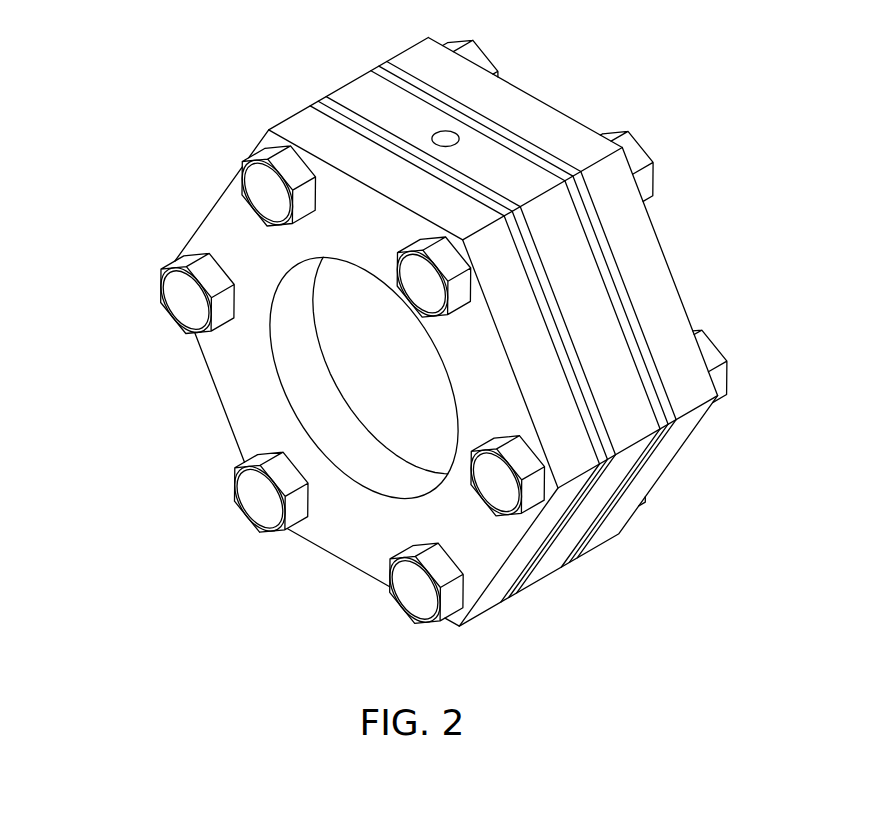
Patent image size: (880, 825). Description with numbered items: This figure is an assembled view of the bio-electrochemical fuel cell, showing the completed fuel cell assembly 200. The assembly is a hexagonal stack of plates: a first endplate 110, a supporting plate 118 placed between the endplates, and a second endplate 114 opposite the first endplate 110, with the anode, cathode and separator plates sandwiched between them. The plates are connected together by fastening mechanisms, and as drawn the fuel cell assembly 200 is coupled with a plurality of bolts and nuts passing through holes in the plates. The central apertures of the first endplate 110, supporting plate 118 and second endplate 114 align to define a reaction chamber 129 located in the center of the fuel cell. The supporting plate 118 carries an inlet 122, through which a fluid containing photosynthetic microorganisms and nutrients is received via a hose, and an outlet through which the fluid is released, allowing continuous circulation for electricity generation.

The fuel cell assembly 200 is at (146, 98).
The first endplate 110 is at (558, 388).
The second endplate 114 is at (627, 248).
The supporting plate 118 is at (368, 95).
The inlet 122 is at (443, 136).
The reaction chamber 129 is at (358, 366).